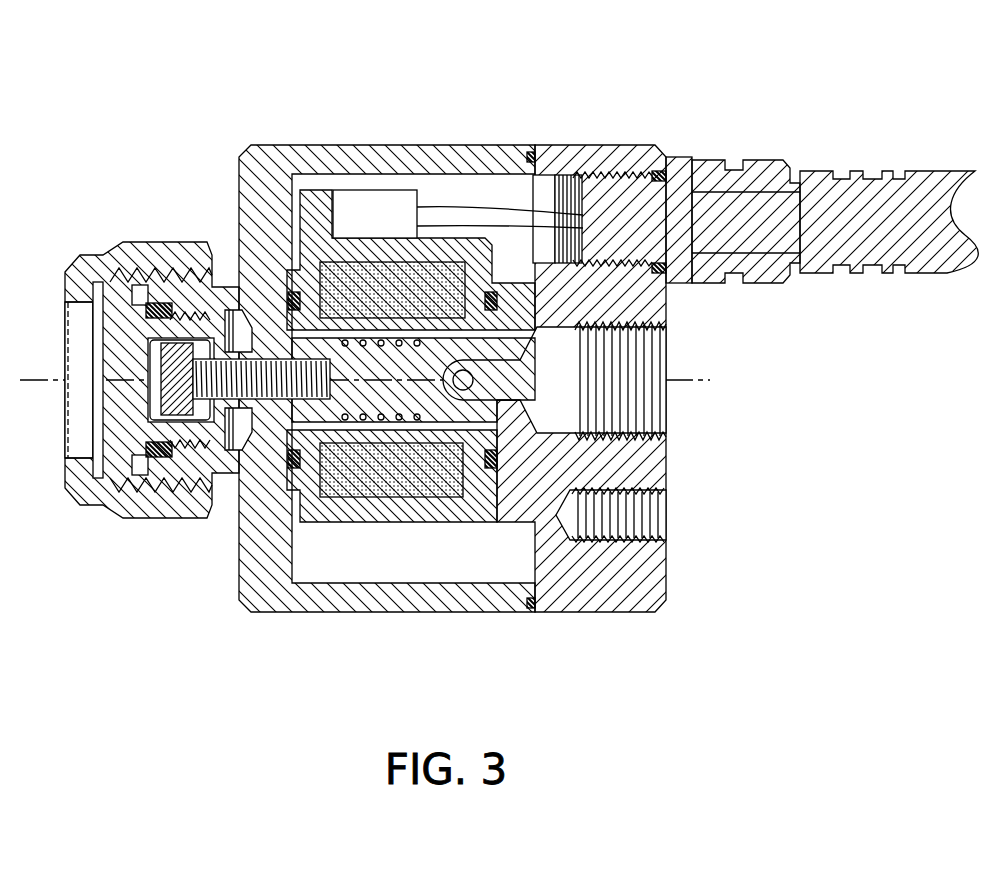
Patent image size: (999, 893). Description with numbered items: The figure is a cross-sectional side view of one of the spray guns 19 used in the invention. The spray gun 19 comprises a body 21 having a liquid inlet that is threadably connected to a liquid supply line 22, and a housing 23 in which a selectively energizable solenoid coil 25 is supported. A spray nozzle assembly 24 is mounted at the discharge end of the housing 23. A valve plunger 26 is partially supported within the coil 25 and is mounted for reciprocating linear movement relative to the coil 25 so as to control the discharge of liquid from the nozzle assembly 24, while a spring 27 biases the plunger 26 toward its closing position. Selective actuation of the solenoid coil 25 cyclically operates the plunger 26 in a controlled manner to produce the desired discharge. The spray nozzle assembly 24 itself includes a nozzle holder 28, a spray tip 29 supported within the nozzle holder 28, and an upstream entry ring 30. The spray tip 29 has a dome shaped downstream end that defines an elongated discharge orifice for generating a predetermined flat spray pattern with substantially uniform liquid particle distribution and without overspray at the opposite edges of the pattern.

The spray gun 19 is at (248, 103).
The body 21 is at (413, 148).
The liquid supply line 22 is at (830, 222).
The housing 23 is at (340, 507).
The spray nozzle assembly 24 is at (62, 532).
The solenoid coil 25 is at (393, 473).
The valve plunger 26 is at (155, 385).
The spring 27 is at (218, 405).
The nozzle holder 28 is at (163, 303).
The spray tip 29 is at (110, 287).
The upstream entry ring 30 is at (80, 272).